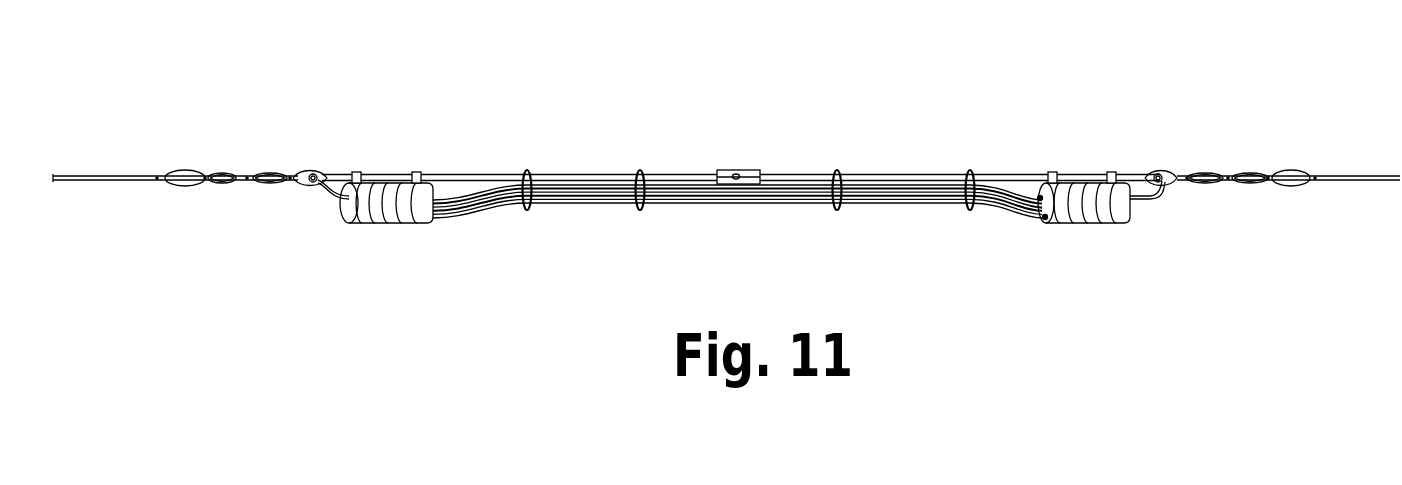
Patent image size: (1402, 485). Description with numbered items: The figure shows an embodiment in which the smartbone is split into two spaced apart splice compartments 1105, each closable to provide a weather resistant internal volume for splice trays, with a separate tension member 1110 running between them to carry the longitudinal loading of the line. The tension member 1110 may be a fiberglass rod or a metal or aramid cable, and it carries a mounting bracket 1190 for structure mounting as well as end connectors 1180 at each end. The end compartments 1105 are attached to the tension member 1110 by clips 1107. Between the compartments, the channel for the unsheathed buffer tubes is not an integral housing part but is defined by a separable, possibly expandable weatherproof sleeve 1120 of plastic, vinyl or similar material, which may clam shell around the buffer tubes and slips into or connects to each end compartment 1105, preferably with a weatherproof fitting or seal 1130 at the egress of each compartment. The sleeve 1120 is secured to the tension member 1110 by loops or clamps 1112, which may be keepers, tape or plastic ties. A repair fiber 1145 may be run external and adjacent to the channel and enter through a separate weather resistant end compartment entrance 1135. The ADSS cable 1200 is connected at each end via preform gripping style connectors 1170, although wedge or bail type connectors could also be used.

The splice compartment 1105 is at (380, 223).
The clip 1107 is at (356, 172).
The tension member 1110 is at (444, 173).
The loops or clamps 1112 is at (527, 210).
The sleeve 1120 is at (600, 183).
The weatherproof fitting or seal 1130 is at (1039, 196).
The end compartment entrance 1135 is at (1043, 218).
The repair fiber 1145 is at (1042, 208).
The preform gripping style connector 1170 is at (187, 170).
The end connector 1180 is at (313, 172).
The mounting bracket 1190 is at (740, 176).
The ADSS cable 1200 is at (96, 172).